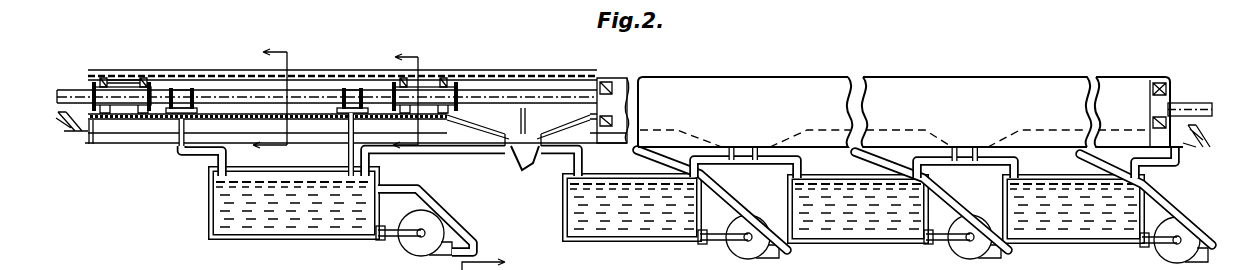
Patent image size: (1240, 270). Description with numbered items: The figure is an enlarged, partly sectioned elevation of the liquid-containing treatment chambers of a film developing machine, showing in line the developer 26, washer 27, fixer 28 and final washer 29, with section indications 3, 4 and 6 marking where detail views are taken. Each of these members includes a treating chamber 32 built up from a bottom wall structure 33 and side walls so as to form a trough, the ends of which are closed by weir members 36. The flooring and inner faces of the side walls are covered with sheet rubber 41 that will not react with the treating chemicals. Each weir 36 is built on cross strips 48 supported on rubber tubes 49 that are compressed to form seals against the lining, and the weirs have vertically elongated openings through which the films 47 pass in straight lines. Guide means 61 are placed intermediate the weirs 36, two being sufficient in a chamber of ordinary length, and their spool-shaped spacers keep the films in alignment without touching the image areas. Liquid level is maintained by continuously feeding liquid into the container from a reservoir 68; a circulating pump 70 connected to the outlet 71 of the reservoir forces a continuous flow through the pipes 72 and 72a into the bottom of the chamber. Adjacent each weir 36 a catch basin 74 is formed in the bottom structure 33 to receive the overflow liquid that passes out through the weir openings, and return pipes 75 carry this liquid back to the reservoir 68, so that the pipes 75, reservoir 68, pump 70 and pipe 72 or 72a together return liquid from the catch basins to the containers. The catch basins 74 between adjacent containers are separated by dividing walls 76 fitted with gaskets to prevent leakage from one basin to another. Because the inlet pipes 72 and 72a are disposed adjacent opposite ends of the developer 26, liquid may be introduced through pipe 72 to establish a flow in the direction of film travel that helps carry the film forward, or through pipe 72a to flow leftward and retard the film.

The developer 26 is at (205, 74).
The washer 27 is at (665, 93).
The fixer 28 is at (901, 95).
The final washer 29 is at (1061, 96).
The treating chamber 32 is at (335, 83).
The bottom wall structure 33 is at (202, 122).
The weir member 36 is at (118, 80).
The sheet rubber 41 is at (153, 82).
The film 47 is at (222, 97).
The cross strip 48 is at (127, 144).
The rubber tube 49 is at (452, 120).
The guide means 61 is at (183, 90).
The reservoir 68 is at (230, 218).
The circulating pump 70 is at (428, 232).
The outlet 71 is at (392, 237).
The pipe 72 is at (188, 186).
The pipe 72a is at (348, 155).
The catch basin 74 is at (485, 126).
The return pipe 75 is at (537, 160).
The dividing wall 76 is at (527, 113).
The section line 6 is at (285, 93).
The section line 3 is at (414, 110).
The section line 4 is at (483, 255).